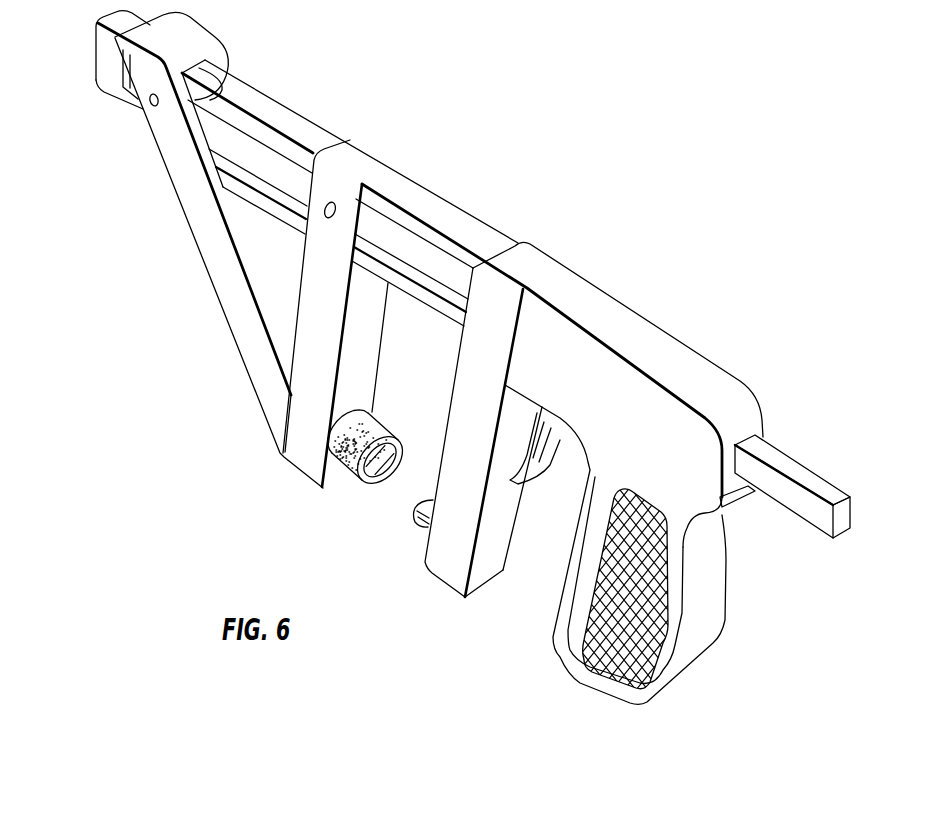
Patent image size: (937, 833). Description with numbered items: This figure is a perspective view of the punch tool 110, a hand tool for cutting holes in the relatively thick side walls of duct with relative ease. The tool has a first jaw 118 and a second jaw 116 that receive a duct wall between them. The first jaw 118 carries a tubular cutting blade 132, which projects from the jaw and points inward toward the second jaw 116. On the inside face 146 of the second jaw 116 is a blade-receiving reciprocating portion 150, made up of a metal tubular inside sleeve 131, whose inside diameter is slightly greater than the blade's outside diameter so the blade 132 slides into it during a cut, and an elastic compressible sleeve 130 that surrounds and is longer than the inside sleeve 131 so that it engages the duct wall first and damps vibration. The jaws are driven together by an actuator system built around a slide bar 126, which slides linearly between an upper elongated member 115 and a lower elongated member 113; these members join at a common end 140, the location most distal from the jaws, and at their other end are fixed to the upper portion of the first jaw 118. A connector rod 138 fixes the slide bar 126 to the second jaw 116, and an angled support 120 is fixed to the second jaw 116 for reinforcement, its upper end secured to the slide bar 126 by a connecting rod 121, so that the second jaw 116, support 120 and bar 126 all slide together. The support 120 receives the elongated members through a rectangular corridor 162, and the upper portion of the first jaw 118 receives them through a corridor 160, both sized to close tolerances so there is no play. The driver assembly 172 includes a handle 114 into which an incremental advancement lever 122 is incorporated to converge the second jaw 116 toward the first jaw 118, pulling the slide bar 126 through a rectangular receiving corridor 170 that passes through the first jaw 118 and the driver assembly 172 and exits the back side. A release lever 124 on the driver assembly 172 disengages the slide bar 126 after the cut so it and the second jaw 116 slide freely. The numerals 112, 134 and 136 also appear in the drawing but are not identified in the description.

The punch tool 110 is at (521, 201).
The upper bar 112 is at (452, 278).
The lower elongated member 113 is at (432, 300).
The handle 114 is at (639, 544).
The upper elongated member 115 is at (268, 100).
The second jaw 116 is at (303, 466).
The first jaw 118 is at (452, 578).
The angled support 120 is at (204, 272).
The connecting rod 121 is at (150, 105).
The incremental advancement lever 122 is at (571, 572).
The release lever 124 is at (546, 462).
The slide bar 126 is at (516, 299).
The elastic compressible sleeve 130 is at (356, 468).
The tubular inside sleeve 131 is at (364, 488).
The tubular cutting blade 132 is at (416, 530).
The jaw head 134 is at (192, 27).
The slide block 136 is at (383, 160).
The connector rod 138 is at (330, 218).
The common end 140 is at (97, 62).
The inside face 146 is at (377, 352).
The blade-receiving reciprocating portion 150 is at (347, 486).
The corridor 160 is at (360, 311).
The corridor 162 is at (217, 82).
The receiving corridor 170 is at (764, 436).
The driver assembly 172 is at (612, 473).